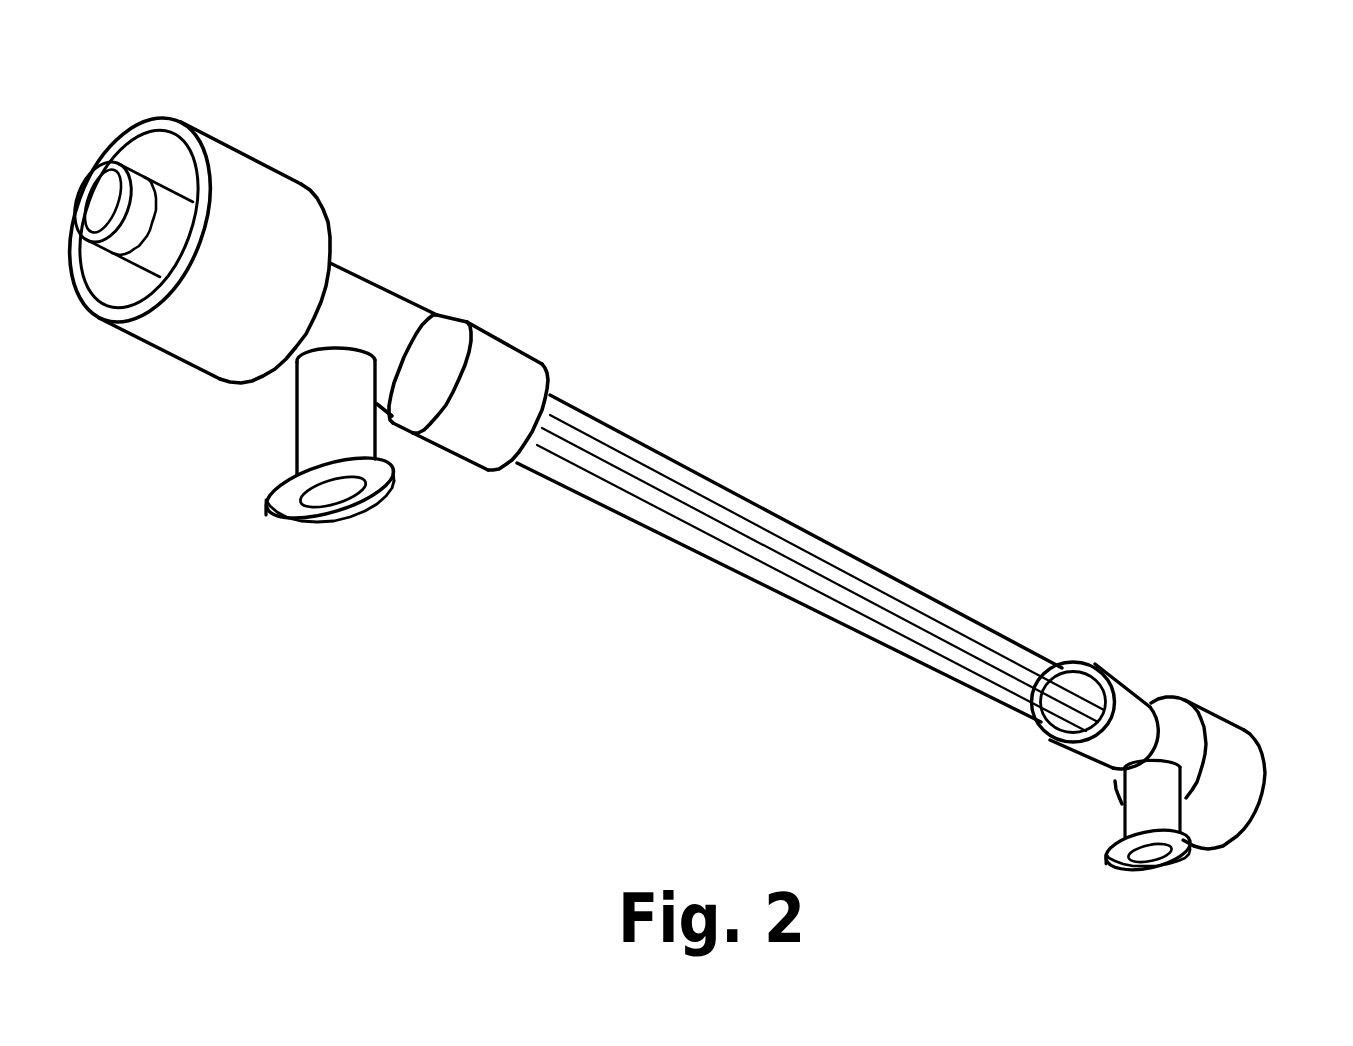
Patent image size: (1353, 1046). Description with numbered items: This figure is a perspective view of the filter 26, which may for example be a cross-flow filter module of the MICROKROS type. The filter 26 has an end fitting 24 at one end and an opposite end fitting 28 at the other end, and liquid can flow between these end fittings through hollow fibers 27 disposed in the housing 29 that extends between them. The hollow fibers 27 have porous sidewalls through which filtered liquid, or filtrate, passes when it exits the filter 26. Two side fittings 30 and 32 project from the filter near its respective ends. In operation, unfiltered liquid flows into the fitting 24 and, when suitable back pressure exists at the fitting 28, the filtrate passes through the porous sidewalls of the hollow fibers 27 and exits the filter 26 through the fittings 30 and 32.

The fitting 24 is at (117, 164).
The filter 26 is at (691, 462).
The hollow fibers 27 is at (767, 580).
The fitting 28 is at (1248, 767).
The housing 29 is at (1034, 652).
The fitting 30 is at (313, 435).
The fitting 32 is at (1138, 815).